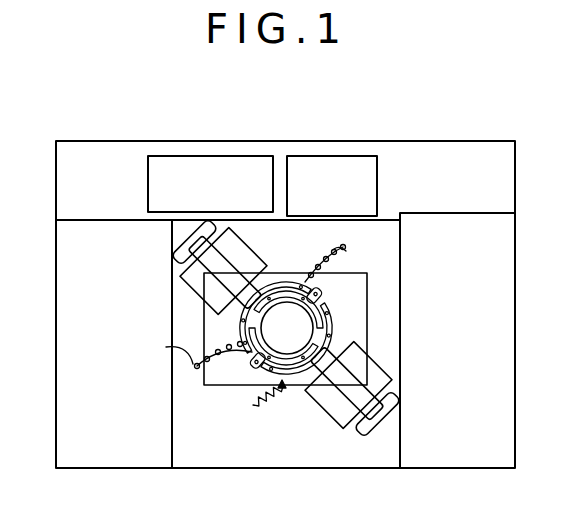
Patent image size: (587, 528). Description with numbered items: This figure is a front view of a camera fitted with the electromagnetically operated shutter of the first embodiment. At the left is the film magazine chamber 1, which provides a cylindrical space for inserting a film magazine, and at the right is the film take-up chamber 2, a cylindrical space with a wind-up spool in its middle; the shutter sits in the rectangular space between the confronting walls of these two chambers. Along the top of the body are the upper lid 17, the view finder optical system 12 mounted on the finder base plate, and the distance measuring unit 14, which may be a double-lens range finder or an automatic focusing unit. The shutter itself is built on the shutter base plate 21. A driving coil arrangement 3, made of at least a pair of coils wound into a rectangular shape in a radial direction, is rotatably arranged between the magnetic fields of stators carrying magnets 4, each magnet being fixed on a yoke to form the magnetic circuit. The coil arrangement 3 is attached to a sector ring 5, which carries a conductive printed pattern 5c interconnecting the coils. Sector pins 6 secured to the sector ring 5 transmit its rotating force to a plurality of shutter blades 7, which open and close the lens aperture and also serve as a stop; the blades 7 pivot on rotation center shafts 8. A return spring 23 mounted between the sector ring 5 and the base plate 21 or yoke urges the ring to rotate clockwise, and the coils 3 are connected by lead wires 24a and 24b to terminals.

The film magazine chamber 1 is at (457, 450).
The film take-up chamber 2 is at (124, 452).
The driving coil arrangement 3 is at (361, 414).
The magnet 4 is at (338, 414).
The sector ring 5 is at (265, 377).
The conductive printed pattern 5c is at (321, 317).
The sector pin 6 is at (250, 372).
The shutter blade 7 is at (334, 331).
The rotation center shaft 8 is at (262, 333).
The view finder optical system 12 is at (330, 176).
The distance measuring unit 14 is at (212, 170).
The upper lid 17 is at (111, 160).
The shutter base plate 21 is at (211, 376).
The return spring 23 is at (280, 395).
The lead wire 24a is at (162, 348).
The lead wire 24b is at (358, 250).